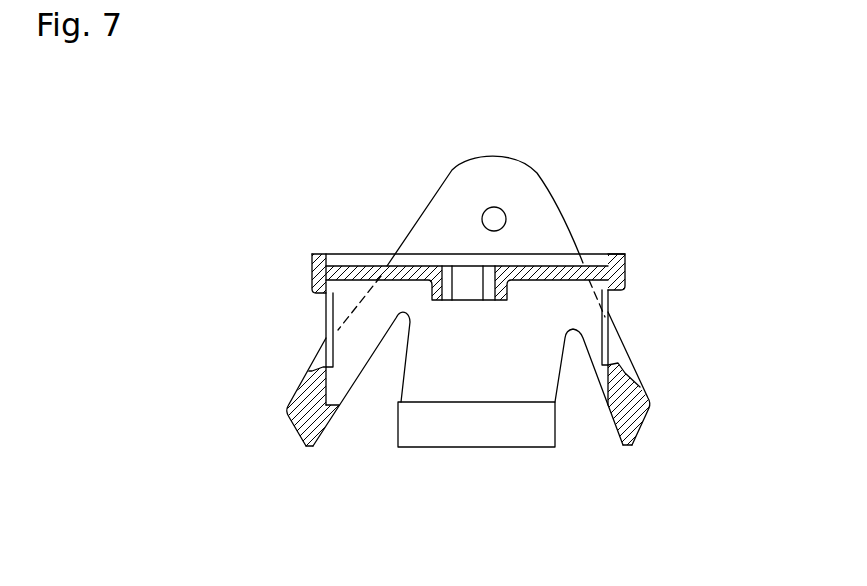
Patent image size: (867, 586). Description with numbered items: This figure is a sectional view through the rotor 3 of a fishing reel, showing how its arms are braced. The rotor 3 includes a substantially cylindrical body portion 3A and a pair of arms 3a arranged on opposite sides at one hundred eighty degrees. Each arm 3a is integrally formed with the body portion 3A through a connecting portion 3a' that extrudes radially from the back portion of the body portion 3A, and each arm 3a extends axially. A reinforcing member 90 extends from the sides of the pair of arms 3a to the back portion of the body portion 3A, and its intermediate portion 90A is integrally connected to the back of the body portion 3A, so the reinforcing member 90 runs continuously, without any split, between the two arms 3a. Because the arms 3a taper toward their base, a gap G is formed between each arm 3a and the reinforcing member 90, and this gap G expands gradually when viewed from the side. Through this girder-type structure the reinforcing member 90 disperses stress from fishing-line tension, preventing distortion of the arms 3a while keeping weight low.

The rotor 3 is at (334, 257).
The body portion 3A is at (625, 253).
The arm 3a is at (471, 227).
The connecting portion 3a' is at (476, 457).
The gap G is at (370, 410).
The reinforcing member 90 is at (303, 386).
The intermediate portion 90A is at (303, 423).